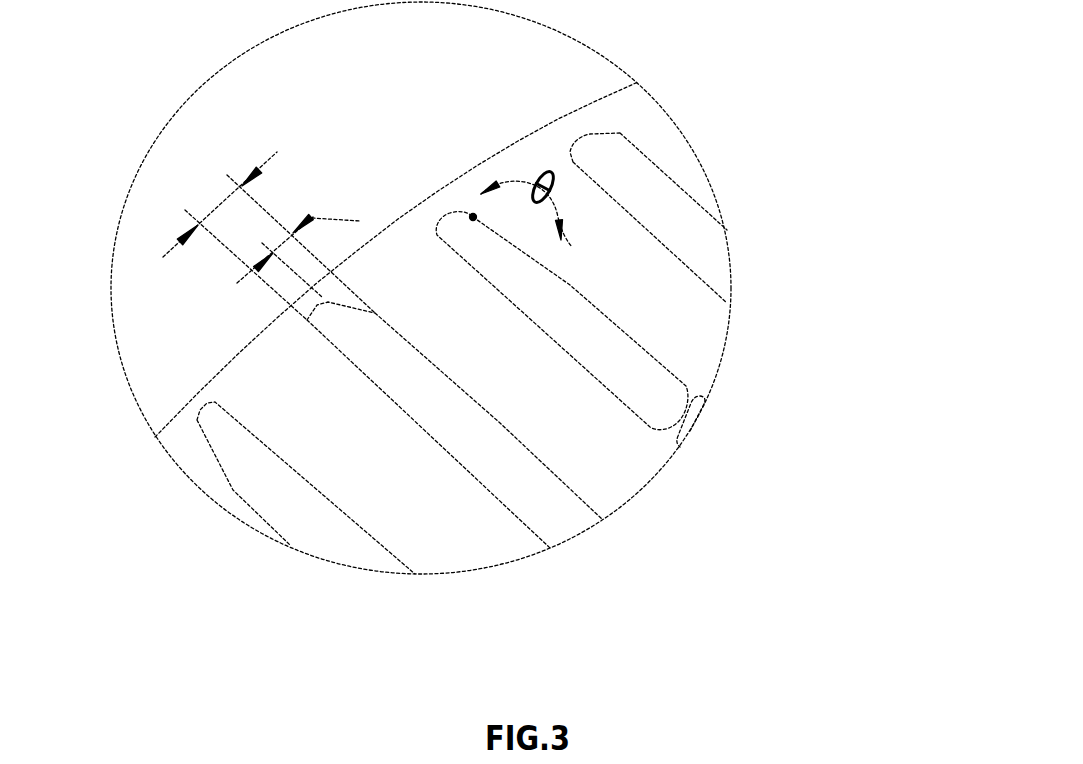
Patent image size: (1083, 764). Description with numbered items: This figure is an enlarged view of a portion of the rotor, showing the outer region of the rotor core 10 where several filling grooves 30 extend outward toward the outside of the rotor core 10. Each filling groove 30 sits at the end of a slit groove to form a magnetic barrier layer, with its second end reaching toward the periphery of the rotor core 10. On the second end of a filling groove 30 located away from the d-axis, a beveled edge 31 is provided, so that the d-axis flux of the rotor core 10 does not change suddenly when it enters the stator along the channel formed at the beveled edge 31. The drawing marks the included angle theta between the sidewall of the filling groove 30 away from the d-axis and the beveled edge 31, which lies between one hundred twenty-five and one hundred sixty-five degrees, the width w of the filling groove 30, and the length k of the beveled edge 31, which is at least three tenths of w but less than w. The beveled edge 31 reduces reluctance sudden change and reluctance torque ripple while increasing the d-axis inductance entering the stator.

The rotor core 10 is at (383, 493).
The filling groove 30 is at (610, 355).
The beveled edge 31 is at (473, 217).